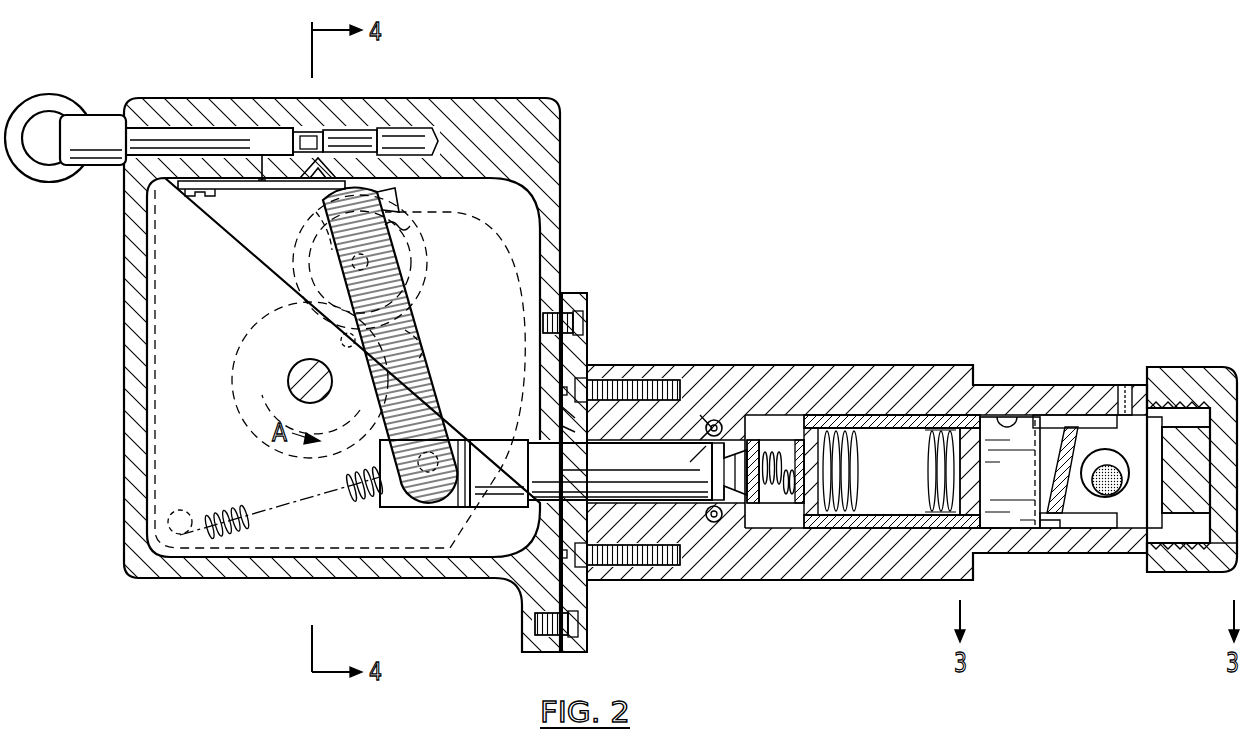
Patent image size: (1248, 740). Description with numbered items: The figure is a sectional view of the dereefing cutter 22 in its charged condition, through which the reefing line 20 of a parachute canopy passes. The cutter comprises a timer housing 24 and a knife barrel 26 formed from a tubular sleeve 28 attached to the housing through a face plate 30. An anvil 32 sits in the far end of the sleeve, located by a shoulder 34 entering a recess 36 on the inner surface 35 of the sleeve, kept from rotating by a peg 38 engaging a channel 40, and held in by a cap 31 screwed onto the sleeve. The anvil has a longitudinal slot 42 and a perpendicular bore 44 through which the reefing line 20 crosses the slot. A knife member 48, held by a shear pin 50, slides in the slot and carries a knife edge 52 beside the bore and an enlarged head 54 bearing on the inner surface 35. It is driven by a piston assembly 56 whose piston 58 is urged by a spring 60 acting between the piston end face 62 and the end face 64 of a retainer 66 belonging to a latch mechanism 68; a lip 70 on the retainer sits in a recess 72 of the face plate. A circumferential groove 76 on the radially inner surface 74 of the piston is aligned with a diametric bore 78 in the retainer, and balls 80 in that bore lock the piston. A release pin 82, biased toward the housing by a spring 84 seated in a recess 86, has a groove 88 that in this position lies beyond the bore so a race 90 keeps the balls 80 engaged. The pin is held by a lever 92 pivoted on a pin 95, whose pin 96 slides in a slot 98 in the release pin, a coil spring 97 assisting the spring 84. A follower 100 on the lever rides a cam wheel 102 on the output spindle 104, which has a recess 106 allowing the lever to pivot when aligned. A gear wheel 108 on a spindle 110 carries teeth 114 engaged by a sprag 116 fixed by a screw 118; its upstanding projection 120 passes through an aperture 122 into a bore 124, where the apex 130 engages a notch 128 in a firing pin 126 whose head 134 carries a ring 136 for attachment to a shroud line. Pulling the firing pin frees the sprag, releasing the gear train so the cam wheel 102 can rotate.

The reefing line 20 is at (1118, 478).
The dereefing cutter 22 is at (698, 190).
The timer housing 24 is at (150, 430).
The knife barrel 26 is at (1019, 570).
The tubular sleeve 28 is at (866, 388).
The face plate 30 is at (580, 292).
The cap 31 is at (1212, 572).
The anvil 32 is at (1182, 566).
The shoulder 34 is at (1195, 400).
The inner surface 35 is at (1010, 416).
The recess 36 is at (1216, 400).
The peg 38 is at (1125, 400).
The channel 40 is at (1060, 420).
The longitudinal slot 42 is at (1083, 516).
The bore 44 is at (1120, 516).
The knife member 48 is at (1010, 472).
The shear pin 50 is at (1048, 528).
The knife edge 52 is at (1082, 437).
The enlarged head 54 is at (1000, 530).
The piston assembly 56 is at (905, 560).
The piston 58 is at (860, 530).
The spring 60 is at (860, 456).
The end face 62 is at (940, 461).
The end face 64 is at (824, 530).
The retainer 66 is at (665, 555).
The latch mechanism 68 is at (736, 424).
The lip 70 is at (560, 430).
The recess 72 is at (563, 413).
The radially inner surface 74 is at (668, 406).
The circumferential groove 76 is at (712, 425).
The bore 78 is at (700, 447).
The balls 80 is at (713, 523).
The release pin 82 is at (555, 478).
The spring 84 is at (778, 440).
The recess 86 is at (790, 516).
The groove 88 is at (760, 516).
The race 90 is at (730, 470).
The lever 92 is at (436, 398).
The pin 95 is at (318, 216).
The pin 96 is at (432, 436).
The coil spring 97 is at (230, 494).
The slot 98 is at (420, 506).
The follower 100 is at (418, 354).
The cam wheel 102 is at (232, 418).
The output spindle 104 is at (289, 382).
The recess 106 is at (350, 349).
The gear wheel 108 is at (302, 258).
The spindle 110 is at (310, 292).
The teeth 114 is at (410, 232).
The sprag 116 is at (242, 190).
The screw 118 is at (187, 194).
The upstanding projection 120 is at (280, 158).
The aperture 122 is at (386, 186).
The bore 124 is at (232, 128).
The firing pin 126 is at (365, 132).
The notch 128 is at (318, 130).
The apex 130 is at (312, 174).
The head 134 is at (109, 133).
The ring 136 is at (53, 182).